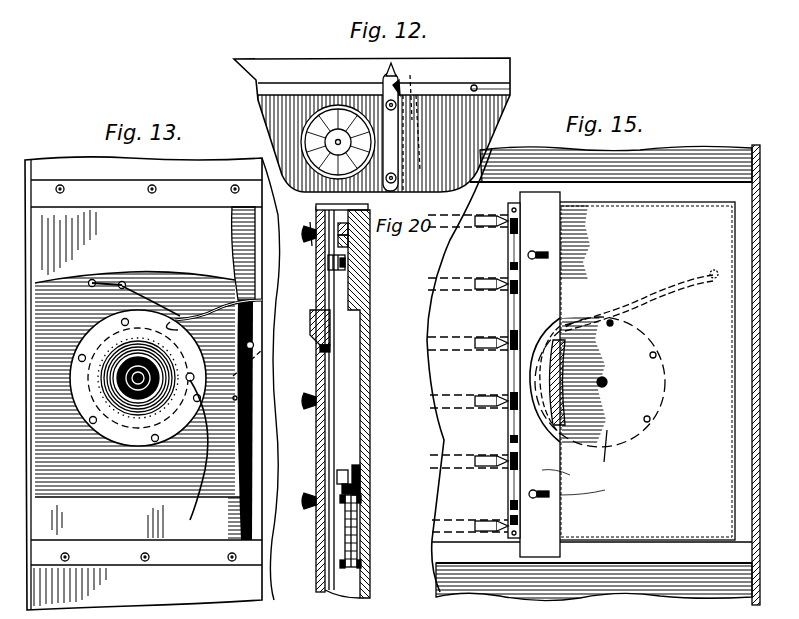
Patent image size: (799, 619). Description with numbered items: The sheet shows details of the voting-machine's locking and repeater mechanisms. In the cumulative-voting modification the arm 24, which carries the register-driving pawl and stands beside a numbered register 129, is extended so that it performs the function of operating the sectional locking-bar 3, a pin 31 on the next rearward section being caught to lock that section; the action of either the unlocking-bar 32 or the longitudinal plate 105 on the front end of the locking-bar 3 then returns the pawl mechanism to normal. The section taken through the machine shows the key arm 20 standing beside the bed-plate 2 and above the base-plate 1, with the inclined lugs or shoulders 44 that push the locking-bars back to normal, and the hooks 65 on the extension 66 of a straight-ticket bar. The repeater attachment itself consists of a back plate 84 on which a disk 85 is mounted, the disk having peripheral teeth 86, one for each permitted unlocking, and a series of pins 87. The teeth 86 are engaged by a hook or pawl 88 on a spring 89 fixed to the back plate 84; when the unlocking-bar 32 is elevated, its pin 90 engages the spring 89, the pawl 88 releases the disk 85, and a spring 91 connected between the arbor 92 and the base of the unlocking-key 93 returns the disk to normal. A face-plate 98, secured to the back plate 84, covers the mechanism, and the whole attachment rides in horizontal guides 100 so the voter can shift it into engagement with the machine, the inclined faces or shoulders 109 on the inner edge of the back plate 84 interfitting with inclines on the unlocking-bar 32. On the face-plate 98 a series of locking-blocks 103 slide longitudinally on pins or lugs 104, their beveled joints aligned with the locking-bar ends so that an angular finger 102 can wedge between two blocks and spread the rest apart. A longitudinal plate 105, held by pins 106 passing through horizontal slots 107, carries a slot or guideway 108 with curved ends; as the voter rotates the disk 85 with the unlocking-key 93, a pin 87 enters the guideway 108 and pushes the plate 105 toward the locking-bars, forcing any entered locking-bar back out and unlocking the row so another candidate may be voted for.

In FIG. 20, the base-plate 1 is at (362, 535).
In FIG. 20, the bed-plate 2 is at (370, 430).
In FIG. 12, the locking-bar 3 is at (508, 90).
In FIG. 20, the locking-bar 3 is at (366, 482).
In FIG. 20, the arm 20 is at (345, 535).
In FIG. 12, the arm 24 is at (393, 88).
In FIG. 12, the pin 31 is at (477, 88).
In FIG. 20, the pin 31 is at (363, 468).
In FIG. 13, the unlocking-bar 32 is at (252, 480).
In FIG. 20, the inclined lugs or shoulders 44 is at (343, 470).
In FIG. 20, the hooks 65 is at (320, 207).
In FIG. 20, the extension 66 is at (335, 345).
In FIG. 13, the back plate 84 is at (240, 397).
In FIG. 13, the disk 85 is at (178, 330).
In FIG. 15, the disk 85 is at (613, 455).
In FIG. 13, the teeth 86 is at (230, 378).
In FIG. 15, the teeth 86 is at (663, 410).
In FIG. 13, the pins 87 is at (128, 320).
In FIG. 13, the hook or pawl 88 is at (172, 320).
In FIG. 15, the hook or pawl 88 is at (585, 322).
In FIG. 13, the spring 89 is at (258, 302).
In FIG. 13, the pin 90 is at (253, 344).
In FIG. 13, the spring 91 is at (135, 400).
In FIG. 13, the arbor 92 is at (145, 370).
In FIG. 15, the arbor 92 is at (607, 383).
In FIG. 13, the unlocking-key 93 is at (193, 457).
In FIG. 13, the face-plate 98 is at (101, 515).
In FIG. 15, the face-plate 98 is at (646, 371).
In FIG. 13, the horizontal guides 100 is at (146, 373).
In FIG. 15, the horizontal guides 100 is at (703, 190).
In FIG. 15, the angular finger 102 is at (495, 289).
In FIG. 15, the locking-blocks 103 is at (520, 366).
In FIG. 15, the pins or lugs 104 is at (508, 436).
In FIG. 15, the longitudinal plate 105 is at (617, 494).
In FIG. 15, the pins 106 is at (532, 259).
In FIG. 15, the slots 107 is at (536, 498).
In FIG. 15, the slot or guideway 108 is at (560, 378).
In FIG. 13, the inclined faces or shoulders 109 is at (242, 430).
In FIG. 12, the number dial 129 is at (338, 104).